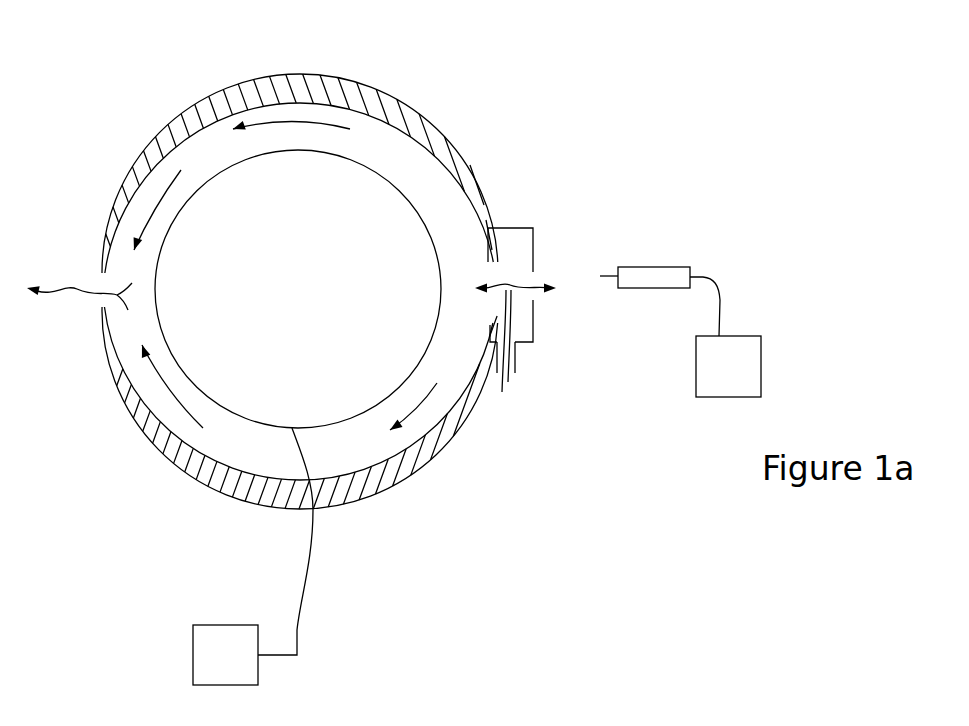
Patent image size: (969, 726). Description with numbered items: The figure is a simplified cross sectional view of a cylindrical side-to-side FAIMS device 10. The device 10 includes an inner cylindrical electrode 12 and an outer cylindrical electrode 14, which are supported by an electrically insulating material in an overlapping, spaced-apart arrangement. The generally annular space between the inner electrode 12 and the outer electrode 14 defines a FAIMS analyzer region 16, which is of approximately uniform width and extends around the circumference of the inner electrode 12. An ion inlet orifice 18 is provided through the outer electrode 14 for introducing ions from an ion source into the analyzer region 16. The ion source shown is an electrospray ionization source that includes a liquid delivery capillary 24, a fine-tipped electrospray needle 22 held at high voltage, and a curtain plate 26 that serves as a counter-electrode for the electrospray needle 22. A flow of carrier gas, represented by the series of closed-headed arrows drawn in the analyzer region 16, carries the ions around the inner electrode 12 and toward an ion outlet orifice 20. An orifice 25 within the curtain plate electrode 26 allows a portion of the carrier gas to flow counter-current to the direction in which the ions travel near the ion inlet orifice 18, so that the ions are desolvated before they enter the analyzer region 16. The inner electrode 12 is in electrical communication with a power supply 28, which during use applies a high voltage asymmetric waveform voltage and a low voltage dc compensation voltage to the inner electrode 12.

The cylindrical side-to-side FAIMS device 10 is at (838, 80).
The inner cylindrical electrode 12 is at (255, 422).
The outer cylindrical electrode 14 is at (337, 77).
The FAIMS analyzer region 16 is at (348, 457).
The ion inlet orifice 18 is at (493, 278).
The ion outlet orifice 20 is at (102, 282).
The electrospray needle 22 is at (603, 277).
The liquid delivery capillary 24 is at (723, 288).
The orifice within the curtain plate electrode 25 is at (528, 278).
The curtain plate 26 is at (535, 326).
The power supply 28 is at (193, 666).